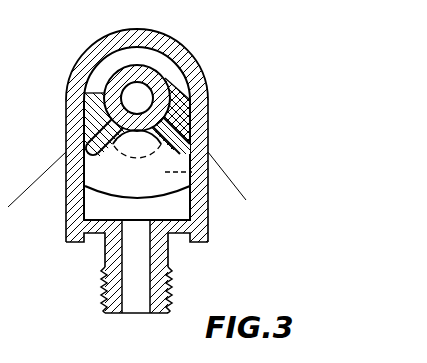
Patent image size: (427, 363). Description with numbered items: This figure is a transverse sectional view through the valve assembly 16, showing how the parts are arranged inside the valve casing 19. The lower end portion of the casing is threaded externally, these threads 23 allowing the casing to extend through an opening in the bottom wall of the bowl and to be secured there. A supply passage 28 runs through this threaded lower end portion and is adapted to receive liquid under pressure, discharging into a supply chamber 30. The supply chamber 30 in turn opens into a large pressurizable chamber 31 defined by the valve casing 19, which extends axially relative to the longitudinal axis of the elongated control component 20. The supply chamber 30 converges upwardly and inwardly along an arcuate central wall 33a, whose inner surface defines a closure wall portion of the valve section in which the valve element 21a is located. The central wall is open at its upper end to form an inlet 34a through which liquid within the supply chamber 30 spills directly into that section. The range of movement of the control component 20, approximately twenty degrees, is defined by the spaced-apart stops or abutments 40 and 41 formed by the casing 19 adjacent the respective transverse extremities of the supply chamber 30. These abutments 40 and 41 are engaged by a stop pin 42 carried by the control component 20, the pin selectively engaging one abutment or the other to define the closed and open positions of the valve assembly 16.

The valve assembly 16 is at (157, 25).
The valve casing 19 is at (186, 51).
The control component 20 is at (122, 72).
The pressurizable chamber 31 is at (180, 86).
The inlet 34a is at (208, 97).
The abutment 41 is at (206, 124).
The abutment 40 is at (104, 132).
The stop pin 42 is at (82, 153).
The central wall 33a is at (178, 153).
The valve element 21a is at (214, 167).
The supply chamber 30 is at (93, 211).
The threaded lower end portion 23 is at (106, 276).
The supply passage 28 is at (127, 297).